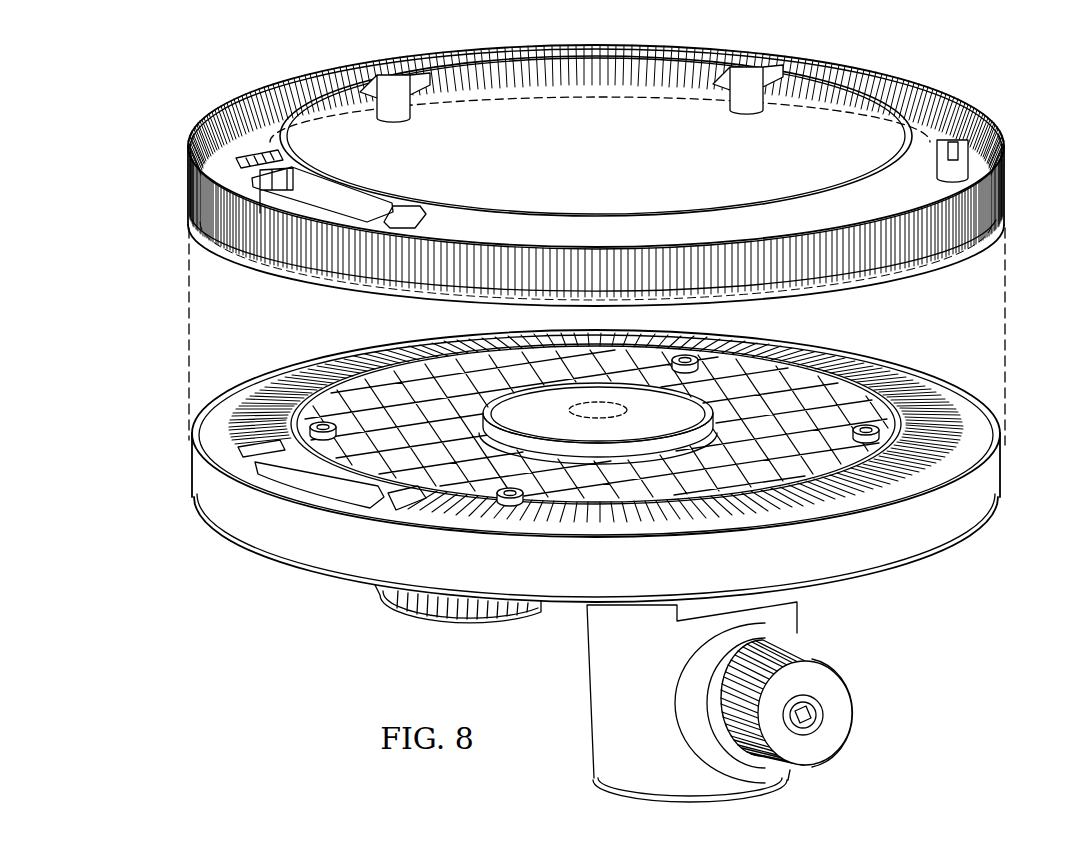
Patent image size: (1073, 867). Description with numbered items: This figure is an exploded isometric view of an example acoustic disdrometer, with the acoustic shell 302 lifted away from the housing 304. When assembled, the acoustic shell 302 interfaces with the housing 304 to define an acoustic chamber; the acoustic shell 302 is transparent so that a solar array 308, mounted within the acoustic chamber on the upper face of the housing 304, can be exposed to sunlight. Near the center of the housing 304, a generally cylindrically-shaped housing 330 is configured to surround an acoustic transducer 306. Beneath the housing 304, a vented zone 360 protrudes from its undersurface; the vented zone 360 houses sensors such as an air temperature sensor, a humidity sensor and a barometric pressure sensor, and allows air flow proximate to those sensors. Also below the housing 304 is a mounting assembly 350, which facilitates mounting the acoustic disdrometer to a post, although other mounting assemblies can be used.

The acoustic shell 302 is at (1005, 103).
The housing 304 is at (900, 566).
The acoustic transducer 306 is at (595, 419).
The solar array 308 is at (822, 394).
The housing 330 is at (505, 392).
The mounting assembly 350 is at (857, 716).
The vented zone 360 is at (431, 627).